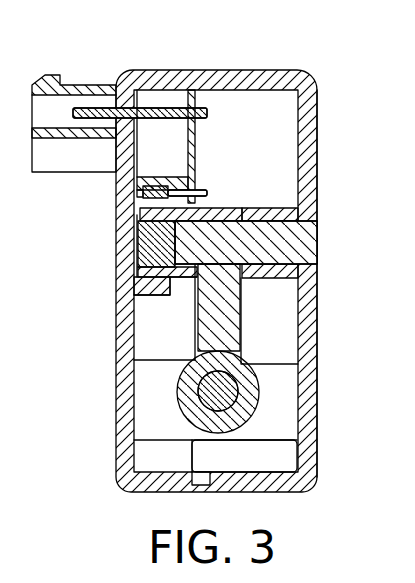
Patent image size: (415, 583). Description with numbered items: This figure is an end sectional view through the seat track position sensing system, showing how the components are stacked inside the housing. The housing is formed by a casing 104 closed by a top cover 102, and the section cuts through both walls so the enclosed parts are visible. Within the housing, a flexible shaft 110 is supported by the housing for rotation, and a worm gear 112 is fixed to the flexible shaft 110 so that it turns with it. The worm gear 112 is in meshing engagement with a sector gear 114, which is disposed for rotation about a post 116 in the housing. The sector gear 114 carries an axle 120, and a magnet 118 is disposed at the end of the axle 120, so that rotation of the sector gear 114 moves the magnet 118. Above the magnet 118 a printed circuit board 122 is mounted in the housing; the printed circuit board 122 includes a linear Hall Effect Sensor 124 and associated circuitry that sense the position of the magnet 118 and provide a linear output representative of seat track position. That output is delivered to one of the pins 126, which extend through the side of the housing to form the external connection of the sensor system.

The top cover 102 is at (117, 378).
The casing 104 is at (318, 350).
The flexible shaft 110 is at (212, 393).
The worm gear 112 is at (177, 390).
The sector gear 114 is at (243, 327).
The post 116 is at (318, 248).
The magnet 118 is at (148, 249).
The axle 120 is at (140, 211).
The printed circuit board 122 is at (194, 156).
The linear Hall Effect Sensor 124 is at (138, 195).
The pins 126 is at (97, 110).